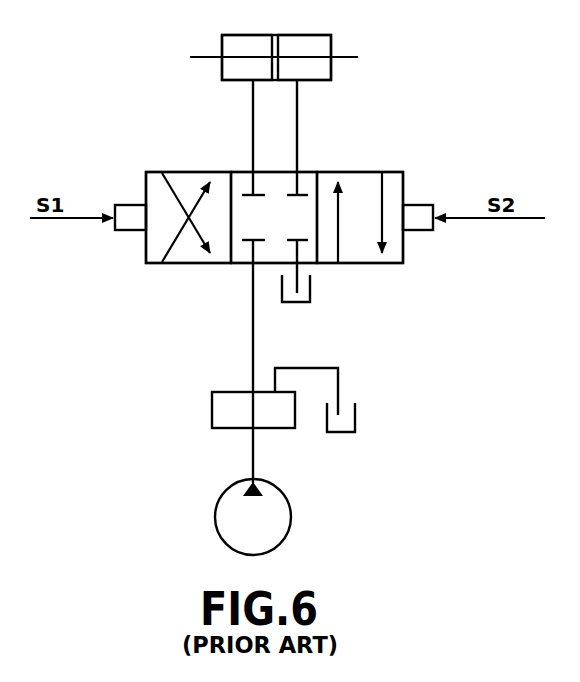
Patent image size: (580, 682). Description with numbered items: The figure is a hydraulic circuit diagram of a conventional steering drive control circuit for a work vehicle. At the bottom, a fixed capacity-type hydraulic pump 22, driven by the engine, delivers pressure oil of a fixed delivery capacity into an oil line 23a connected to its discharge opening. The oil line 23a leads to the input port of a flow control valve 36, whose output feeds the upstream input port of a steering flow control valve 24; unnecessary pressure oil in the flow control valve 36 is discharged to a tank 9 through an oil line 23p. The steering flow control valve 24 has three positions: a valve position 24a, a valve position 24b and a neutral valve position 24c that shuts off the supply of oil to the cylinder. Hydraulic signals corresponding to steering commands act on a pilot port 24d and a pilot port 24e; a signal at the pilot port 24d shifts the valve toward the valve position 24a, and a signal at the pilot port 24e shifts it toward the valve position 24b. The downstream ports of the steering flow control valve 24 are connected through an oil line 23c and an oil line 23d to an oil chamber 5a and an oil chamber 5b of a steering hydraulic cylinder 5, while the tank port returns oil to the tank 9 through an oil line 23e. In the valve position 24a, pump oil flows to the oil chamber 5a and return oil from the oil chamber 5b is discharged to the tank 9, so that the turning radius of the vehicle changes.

The steering hydraulic cylinder 5 is at (313, 35).
The oil chamber 5a is at (331, 68).
The oil chamber 5b is at (222, 72).
The tank 9 is at (298, 302).
The fixed capacity-type hydraulic pump 22 is at (292, 517).
The oil line 23a is at (253, 357).
The oil line 23c is at (297, 128).
The oil line 23d is at (253, 133).
The oil line 23e is at (307, 277).
The oil line 23p is at (338, 382).
The steering flow control valve 24 is at (294, 217).
The valve position 24a is at (170, 263).
The valve position 24b is at (395, 263).
The neutral valve position 24c is at (243, 263).
The pilot port 24d is at (127, 230).
The pilot port 24e is at (422, 230).
The flow control valve 36 is at (200, 408).